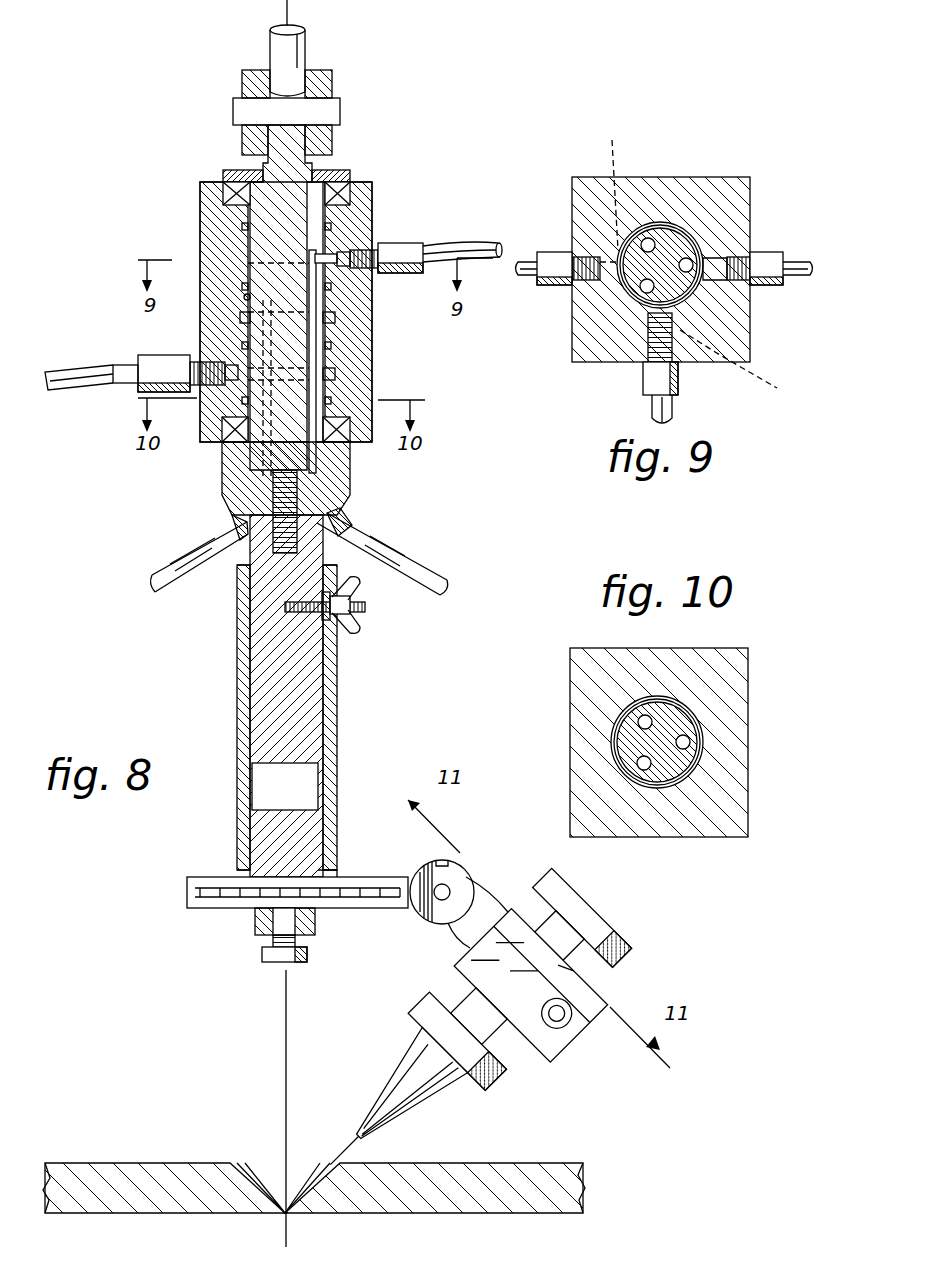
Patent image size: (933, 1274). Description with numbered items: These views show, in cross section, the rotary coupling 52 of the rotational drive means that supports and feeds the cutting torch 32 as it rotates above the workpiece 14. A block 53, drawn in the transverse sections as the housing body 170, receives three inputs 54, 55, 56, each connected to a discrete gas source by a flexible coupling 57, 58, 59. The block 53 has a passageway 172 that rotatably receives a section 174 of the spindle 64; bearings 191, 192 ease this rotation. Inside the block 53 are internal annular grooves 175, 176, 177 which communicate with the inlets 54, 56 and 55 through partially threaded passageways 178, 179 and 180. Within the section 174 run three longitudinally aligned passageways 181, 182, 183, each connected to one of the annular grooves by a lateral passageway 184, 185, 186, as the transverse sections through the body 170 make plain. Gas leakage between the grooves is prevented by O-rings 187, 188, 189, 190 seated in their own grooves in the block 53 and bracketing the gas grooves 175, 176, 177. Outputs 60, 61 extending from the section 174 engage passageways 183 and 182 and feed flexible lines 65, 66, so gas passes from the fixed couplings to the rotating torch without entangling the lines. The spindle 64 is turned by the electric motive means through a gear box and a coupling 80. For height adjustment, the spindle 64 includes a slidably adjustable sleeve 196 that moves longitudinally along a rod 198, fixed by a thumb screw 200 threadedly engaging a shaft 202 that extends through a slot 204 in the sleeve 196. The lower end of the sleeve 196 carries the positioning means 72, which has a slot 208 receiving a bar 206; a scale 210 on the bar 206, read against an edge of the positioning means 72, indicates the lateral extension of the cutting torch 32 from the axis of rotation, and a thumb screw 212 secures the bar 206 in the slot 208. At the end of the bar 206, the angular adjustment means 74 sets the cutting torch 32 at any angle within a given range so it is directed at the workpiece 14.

In FIG. 8, the workpiece 14 is at (172, 1163).
In FIG. 8, the cutting torch 32 is at (390, 1078).
In FIG. 8, the rotary coupling 52 is at (374, 357).
In FIG. 8, the block 53 is at (205, 228).
In FIG. 8, the input 54 is at (410, 243).
In FIG. 9, the input 54 is at (770, 287).
In FIG. 8, the input 55 is at (138, 355).
In FIG. 9, the input 55 is at (548, 252).
In FIG. 9, the input 56 is at (640, 377).
In FIG. 8, the flexible coupling 57 is at (470, 243).
In FIG. 9, the flexible coupling 57 is at (795, 280).
In FIG. 8, the flexible coupling 58 is at (93, 368).
In FIG. 9, the flexible coupling 58 is at (525, 262).
In FIG. 9, the flexible coupling 59 is at (652, 408).
In FIG. 8, the output 60 is at (244, 520).
In FIG. 8, the output 61 is at (393, 515).
In FIG. 8, the spindle 64 is at (345, 735).
In FIG. 8, the flexible line 65 is at (170, 575).
In FIG. 8, the flexible line 66 is at (405, 550).
In FIG. 8, the positioning means 72 is at (322, 877).
In FIG. 8, the angular adjustment means 74 is at (462, 866).
In FIG. 8, the coupling 80 is at (335, 140).
In FIG. 9, the manifold block 170 is at (720, 178).
In FIG. 10, the manifold block 170 is at (740, 650).
In FIG. 8, the passageway 172 is at (244, 262).
In FIG. 8, the section 174 is at (232, 513).
In FIG. 9, the section 174 is at (622, 255).
In FIG. 10, the section 174 is at (690, 710).
In FIG. 8, the internal annular groove 175 is at (240, 222).
In FIG. 9, the internal annular groove 175 is at (730, 225).
In FIG. 8, the internal annular groove 176 is at (245, 298).
In FIG. 8, the internal annular groove 177 is at (336, 372).
In FIG. 9, the partially threaded passageway 178 is at (718, 252).
In FIG. 9, the partially threaded passageway 179 is at (777, 388).
In FIG. 9, the partially threaded passageway 180 is at (612, 181).
In FIG. 8, the longitudinally aligned passageway 181 is at (336, 315).
In FIG. 9, the longitudinally aligned passageway 181 is at (735, 200).
In FIG. 10, the longitudinally aligned passageway 181 is at (690, 738).
In FIG. 8, the longitudinally aligned passageway 182 is at (247, 334).
In FIG. 9, the longitudinally aligned passageway 182 is at (575, 362).
In FIG. 10, the longitudinally aligned passageway 182 is at (655, 765).
In FIG. 9, the longitudinally aligned passageway 183 is at (703, 178).
In FIG. 10, the longitudinally aligned passageway 183 is at (640, 722).
In FIG. 8, the lateral passageway 184 is at (320, 249).
In FIG. 9, the lateral passageway 184 is at (752, 296).
In FIG. 9, the lateral passageway 185 is at (575, 333).
In FIG. 9, the lateral passageway 186 is at (665, 222).
In FIG. 8, the O-ring 187 is at (331, 224).
In FIG. 8, the O-ring 188 is at (335, 288).
In FIG. 8, the O-ring 189 is at (335, 345).
In FIG. 10, the O-ring 190 is at (620, 740).
In FIG. 8, the bearing 191 is at (228, 195).
In FIG. 8, the bearing 192 is at (222, 442).
In FIG. 8, the slidably adjustable sleeve 196 is at (237, 665).
In FIG. 8, the rod 198 is at (310, 680).
In FIG. 8, the thumb screw 200 is at (357, 625).
In FIG. 8, the shaft 202 is at (365, 607).
In FIG. 8, the slot 204 is at (330, 637).
In FIG. 8, the bar 206 is at (367, 910).
In FIG. 8, the slot 208 is at (262, 908).
In FIG. 8, the scale 210 is at (337, 893).
In FIG. 8, the thumb screw 212 is at (262, 955).